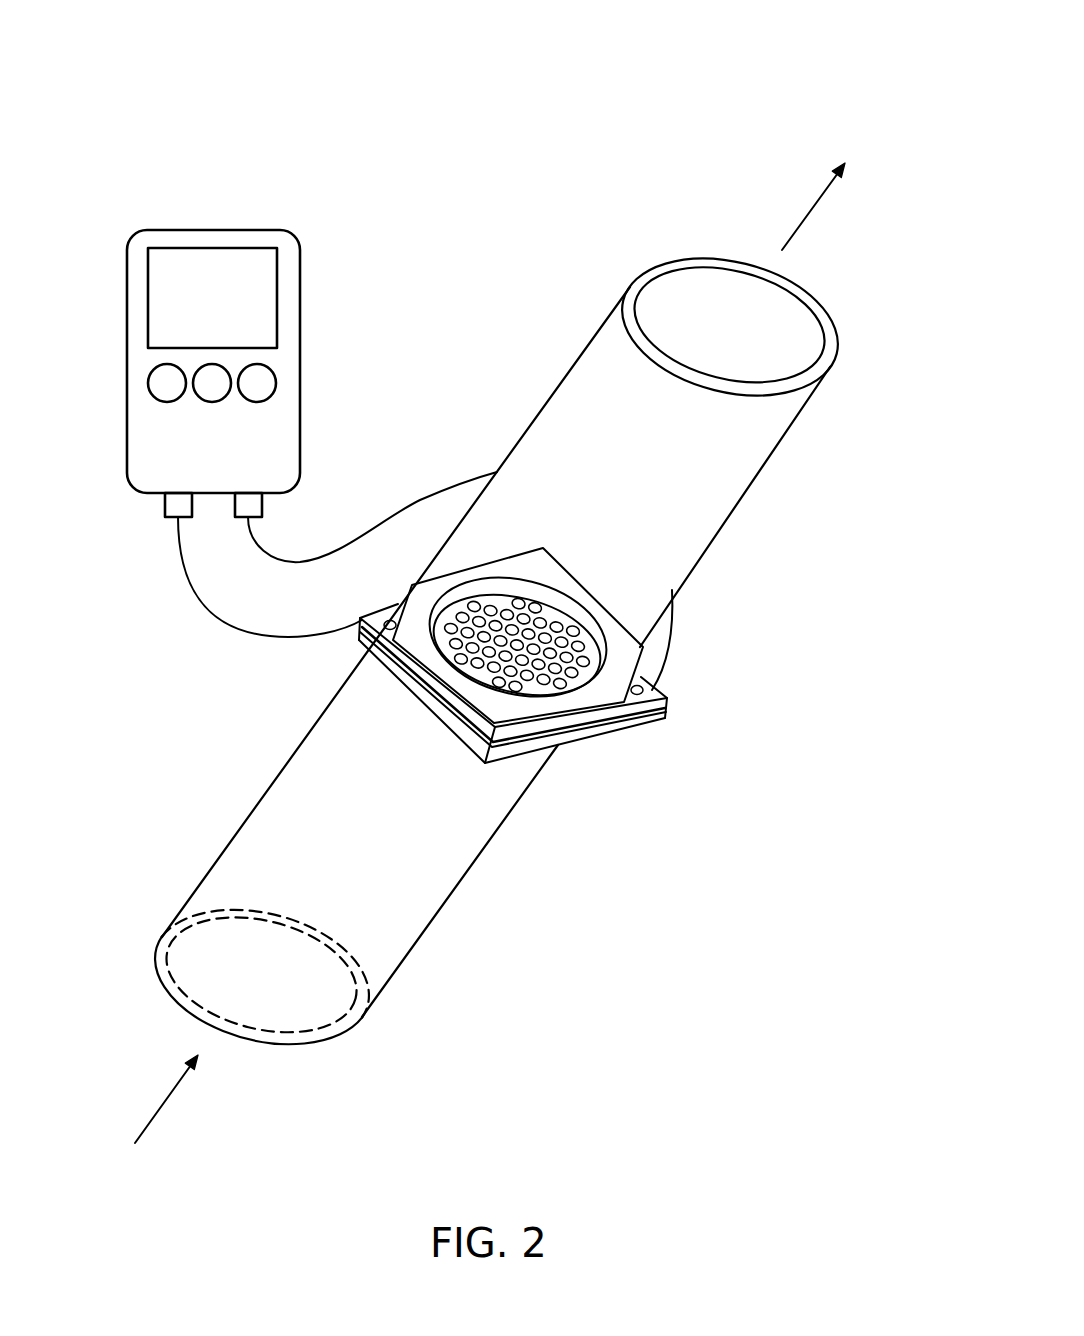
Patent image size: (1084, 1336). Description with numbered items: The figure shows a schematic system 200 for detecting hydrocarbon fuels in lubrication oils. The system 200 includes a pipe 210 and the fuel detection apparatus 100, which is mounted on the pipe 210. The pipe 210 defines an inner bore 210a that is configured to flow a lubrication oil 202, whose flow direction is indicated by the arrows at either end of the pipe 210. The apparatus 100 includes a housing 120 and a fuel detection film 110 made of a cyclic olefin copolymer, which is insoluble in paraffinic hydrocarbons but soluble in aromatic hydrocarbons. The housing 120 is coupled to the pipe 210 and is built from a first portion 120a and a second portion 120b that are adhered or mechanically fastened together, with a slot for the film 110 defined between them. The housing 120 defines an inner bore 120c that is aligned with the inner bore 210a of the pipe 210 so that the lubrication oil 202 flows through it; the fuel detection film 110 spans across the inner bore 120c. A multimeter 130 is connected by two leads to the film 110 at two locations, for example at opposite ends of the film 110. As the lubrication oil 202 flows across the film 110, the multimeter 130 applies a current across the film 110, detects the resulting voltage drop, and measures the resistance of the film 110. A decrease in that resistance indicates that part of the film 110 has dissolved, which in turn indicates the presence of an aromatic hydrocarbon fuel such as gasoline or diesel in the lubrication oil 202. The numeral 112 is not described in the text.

The apparatus 100 is at (402, 300).
The fuel detection film 110 is at (658, 695).
The sensing element 112 is at (565, 607).
The housing 120 is at (645, 762).
The first portion 120a is at (480, 566).
The second portion 120b is at (462, 738).
The inner bore 120c is at (570, 640).
The multimeter 130 is at (300, 393).
The system 200 is at (737, 81).
The lubrication oil 202 is at (805, 213).
The pipe 210 is at (438, 910).
The inner bore 210a is at (813, 320).